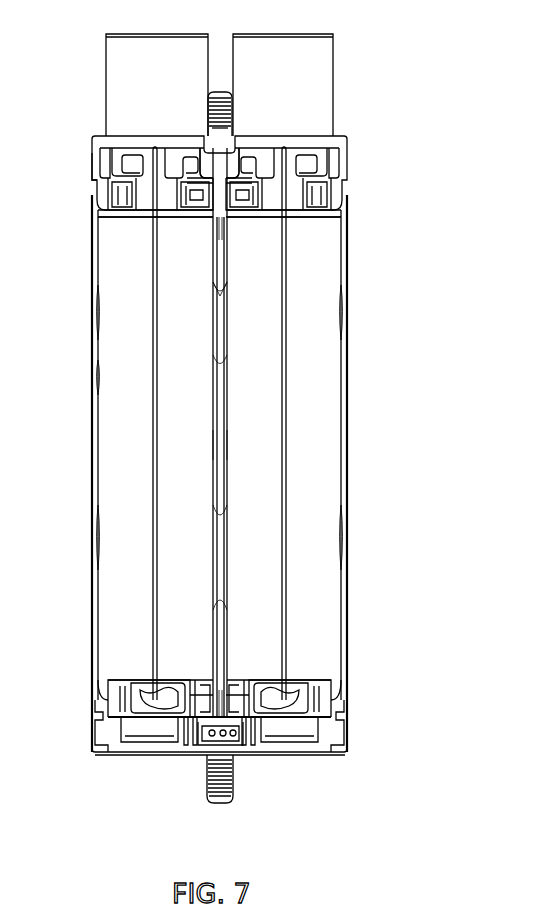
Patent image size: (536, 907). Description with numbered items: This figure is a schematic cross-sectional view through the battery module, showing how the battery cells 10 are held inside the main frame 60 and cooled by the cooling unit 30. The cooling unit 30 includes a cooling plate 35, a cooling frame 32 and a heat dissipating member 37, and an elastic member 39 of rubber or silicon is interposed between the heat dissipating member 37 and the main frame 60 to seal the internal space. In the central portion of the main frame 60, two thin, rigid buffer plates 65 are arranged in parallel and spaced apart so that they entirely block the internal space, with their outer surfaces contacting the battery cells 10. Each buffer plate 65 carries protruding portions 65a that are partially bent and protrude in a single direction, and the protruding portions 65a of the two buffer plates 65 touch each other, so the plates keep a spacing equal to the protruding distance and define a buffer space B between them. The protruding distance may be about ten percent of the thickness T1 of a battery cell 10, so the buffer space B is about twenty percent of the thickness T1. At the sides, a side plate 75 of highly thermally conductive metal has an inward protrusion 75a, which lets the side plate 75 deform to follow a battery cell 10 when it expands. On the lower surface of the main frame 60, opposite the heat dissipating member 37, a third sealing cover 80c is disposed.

The battery cell 10 is at (255, 343).
The cooling unit 30 is at (270, 367).
The cooling frame 32 is at (318, 157).
The cooling plate 35 is at (287, 240).
The heat dissipating member 37 is at (322, 84).
The elastic member 39 is at (123, 150).
The main frame 60 is at (213, 163).
The buffer plate 65 is at (125, 463).
The protruding portion 65a is at (220, 335).
The side plate 75 is at (343, 632).
The protrusion 75a is at (343, 441).
The third sealing cover 80c is at (331, 750).
The buffer space B is at (213, 445).
The thickness of the battery cell T1 is at (280, 469).